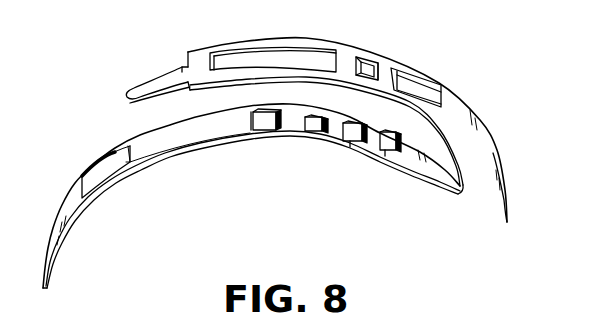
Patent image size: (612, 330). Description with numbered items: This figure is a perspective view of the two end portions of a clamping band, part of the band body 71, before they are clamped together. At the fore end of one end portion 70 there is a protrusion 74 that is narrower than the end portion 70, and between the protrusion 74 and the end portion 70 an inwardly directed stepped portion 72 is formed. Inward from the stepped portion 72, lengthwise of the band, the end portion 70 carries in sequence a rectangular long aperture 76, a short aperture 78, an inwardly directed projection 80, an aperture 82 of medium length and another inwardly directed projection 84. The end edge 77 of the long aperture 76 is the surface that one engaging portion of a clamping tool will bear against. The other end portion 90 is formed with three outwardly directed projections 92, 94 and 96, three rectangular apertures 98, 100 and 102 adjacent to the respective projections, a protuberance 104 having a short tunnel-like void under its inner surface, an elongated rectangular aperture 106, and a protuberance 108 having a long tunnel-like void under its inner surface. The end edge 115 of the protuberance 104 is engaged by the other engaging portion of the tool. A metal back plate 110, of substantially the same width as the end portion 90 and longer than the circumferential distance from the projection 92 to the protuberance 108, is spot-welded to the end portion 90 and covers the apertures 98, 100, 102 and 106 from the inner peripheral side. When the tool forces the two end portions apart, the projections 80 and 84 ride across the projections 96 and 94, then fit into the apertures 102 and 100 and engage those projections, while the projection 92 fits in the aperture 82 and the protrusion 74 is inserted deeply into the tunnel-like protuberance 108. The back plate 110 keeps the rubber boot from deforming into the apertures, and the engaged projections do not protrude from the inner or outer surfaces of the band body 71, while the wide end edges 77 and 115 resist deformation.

The end portion 70 is at (346, 60).
The band body 71 is at (491, 153).
The stepped portion 72 is at (182, 67).
The protrusion 74 is at (140, 85).
The rectangular long aperture 76 is at (252, 57).
The end edge 77 is at (213, 58).
The short aperture 78 is at (374, 66).
The inwardly directed projection 80 is at (364, 65).
The aperture of medium length 82 is at (440, 85).
The inwardly directed projection 84 is at (419, 95).
The end portion 90 is at (290, 130).
The outwardly directed projection 92 is at (393, 152).
The outwardly directed projection 94 is at (355, 142).
The outwardly directed projection 96 is at (313, 134).
The rectangular aperture 98 is at (385, 154).
The rectangular aperture 100 is at (350, 147).
The rectangular aperture 102 is at (293, 143).
The protuberance 104 is at (262, 122).
The elongated rectangular aperture 106 is at (177, 140).
The protuberance 108 is at (105, 170).
The metal back plate 110 is at (113, 185).
The end edge 115 is at (250, 117).